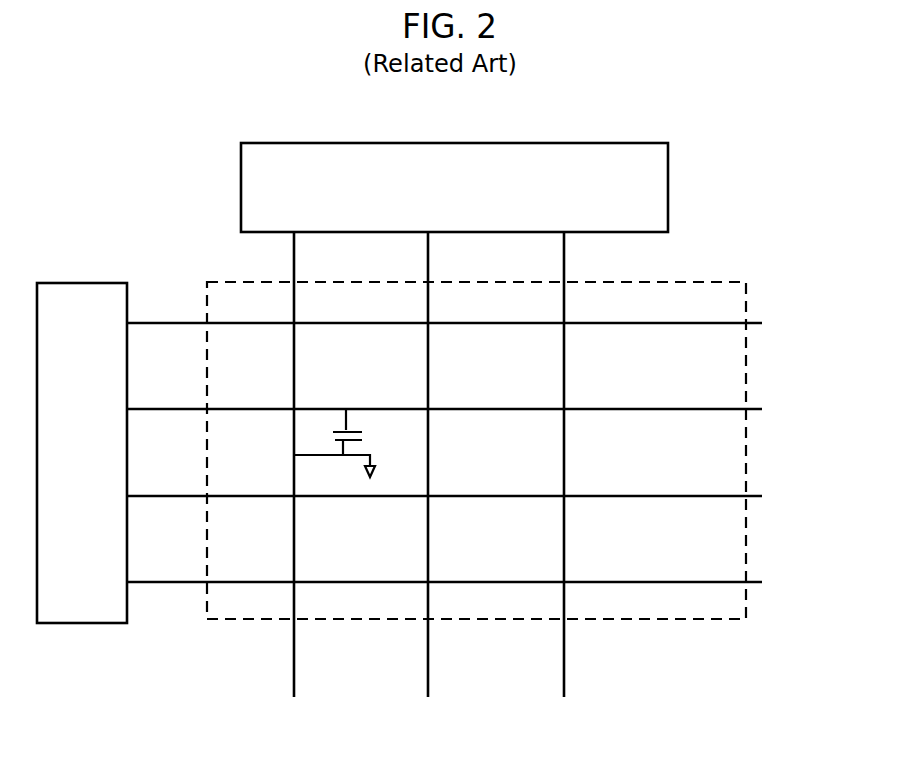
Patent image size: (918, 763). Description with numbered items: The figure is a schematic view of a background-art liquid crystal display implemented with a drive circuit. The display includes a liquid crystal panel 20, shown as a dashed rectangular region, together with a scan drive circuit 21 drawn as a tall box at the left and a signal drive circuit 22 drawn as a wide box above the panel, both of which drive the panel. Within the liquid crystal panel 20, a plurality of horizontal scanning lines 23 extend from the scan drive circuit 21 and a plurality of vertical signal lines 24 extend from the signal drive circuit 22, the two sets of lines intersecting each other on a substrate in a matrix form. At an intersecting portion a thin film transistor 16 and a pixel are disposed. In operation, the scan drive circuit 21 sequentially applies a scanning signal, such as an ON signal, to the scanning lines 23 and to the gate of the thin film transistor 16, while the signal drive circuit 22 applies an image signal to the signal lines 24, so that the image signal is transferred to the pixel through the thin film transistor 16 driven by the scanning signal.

The thin film transistor 16 is at (327, 433).
The liquid crystal panel 20 is at (746, 597).
The scan drive circuit 21 is at (82, 282).
The signal drive circuit 22 is at (241, 188).
The scanning lines 23 is at (754, 323).
The signal lines 24 is at (564, 666).